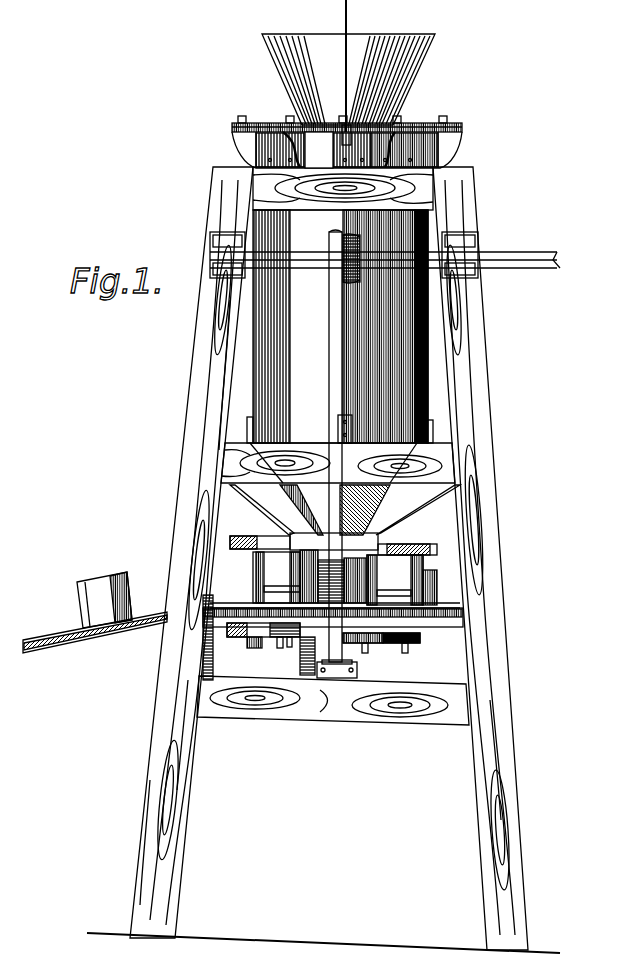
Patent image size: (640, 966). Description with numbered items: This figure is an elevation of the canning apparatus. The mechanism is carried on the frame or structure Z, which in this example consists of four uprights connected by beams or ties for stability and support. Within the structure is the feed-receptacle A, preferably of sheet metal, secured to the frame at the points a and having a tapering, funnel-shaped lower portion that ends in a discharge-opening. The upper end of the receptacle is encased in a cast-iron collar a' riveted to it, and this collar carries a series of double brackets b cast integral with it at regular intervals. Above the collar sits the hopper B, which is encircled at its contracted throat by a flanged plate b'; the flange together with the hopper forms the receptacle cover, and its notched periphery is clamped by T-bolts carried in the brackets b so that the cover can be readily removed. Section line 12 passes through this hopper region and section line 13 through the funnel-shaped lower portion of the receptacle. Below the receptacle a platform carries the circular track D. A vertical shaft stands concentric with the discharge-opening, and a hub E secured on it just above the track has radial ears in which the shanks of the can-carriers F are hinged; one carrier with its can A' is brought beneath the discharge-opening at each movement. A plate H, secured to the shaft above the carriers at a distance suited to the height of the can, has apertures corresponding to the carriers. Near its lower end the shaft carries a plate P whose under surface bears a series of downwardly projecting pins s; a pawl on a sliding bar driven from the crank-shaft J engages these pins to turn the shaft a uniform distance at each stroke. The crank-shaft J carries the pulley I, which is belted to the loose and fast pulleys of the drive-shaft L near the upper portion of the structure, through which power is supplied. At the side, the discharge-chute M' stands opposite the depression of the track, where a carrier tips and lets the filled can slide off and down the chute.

The section line 12 12 is at (350, 331).
The section line 13 13 is at (346, 461).
The feed-receptacle A is at (340, 326).
The can A' is at (265, 587).
The hopper B is at (348, 79).
The circular track D is at (335, 596).
The hub E is at (353, 581).
The can-carrier F is at (430, 588).
The plate H is at (333, 536).
The pulley I is at (368, 655).
The crank-shaft J is at (271, 649).
The drive-shaft L is at (527, 258).
The discharge-chute M' is at (95, 638).
The plate P is at (417, 640).
The frame or structure Z is at (200, 410).
The securing points of receptacle a is at (339, 427).
The cast-iron collar a' is at (328, 146).
The double bracket b is at (348, 142).
The flanged plate b' is at (347, 108).
The pin s is at (416, 654).
The braces v' is at (345, 510).